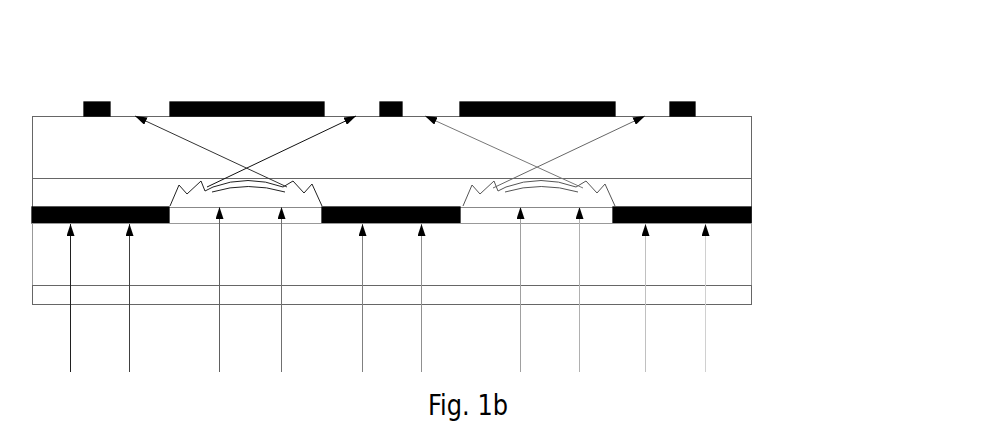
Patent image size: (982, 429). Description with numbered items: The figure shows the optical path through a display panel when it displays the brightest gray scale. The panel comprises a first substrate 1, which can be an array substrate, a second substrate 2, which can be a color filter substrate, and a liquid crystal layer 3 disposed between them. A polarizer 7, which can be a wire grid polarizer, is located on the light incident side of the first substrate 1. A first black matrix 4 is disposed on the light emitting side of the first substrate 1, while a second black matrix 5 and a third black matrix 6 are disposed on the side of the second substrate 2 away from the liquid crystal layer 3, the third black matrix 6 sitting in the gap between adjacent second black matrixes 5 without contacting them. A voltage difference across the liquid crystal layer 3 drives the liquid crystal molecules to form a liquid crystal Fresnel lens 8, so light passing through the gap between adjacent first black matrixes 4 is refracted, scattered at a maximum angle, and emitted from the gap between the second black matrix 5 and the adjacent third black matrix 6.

The first substrate 1 is at (738, 258).
The second substrate 2 is at (708, 147).
The liquid crystal layer 3 is at (582, 200).
The first black matrix 4 is at (751, 216).
The second black matrix 5 is at (537, 100).
The third black matrix 6 is at (695, 108).
The polarizer 7 is at (745, 294).
The liquid crystal Fresnel lens 8 is at (505, 161).